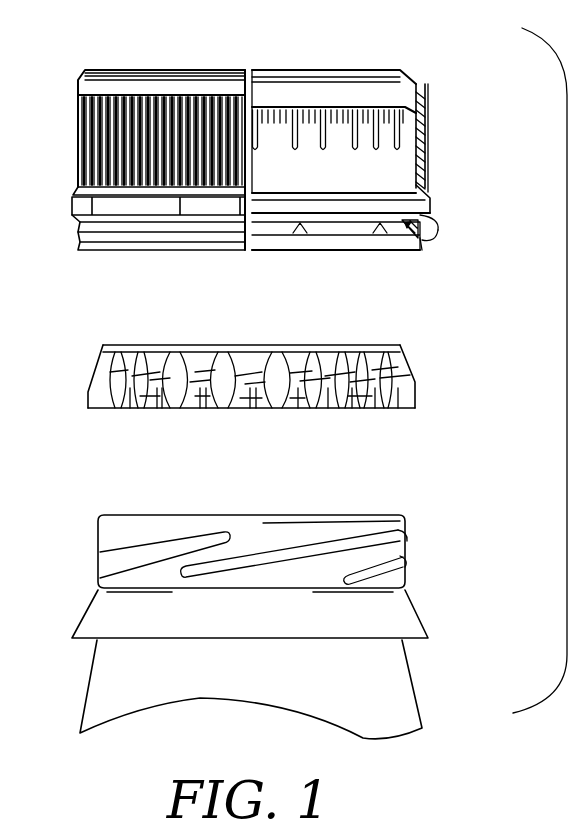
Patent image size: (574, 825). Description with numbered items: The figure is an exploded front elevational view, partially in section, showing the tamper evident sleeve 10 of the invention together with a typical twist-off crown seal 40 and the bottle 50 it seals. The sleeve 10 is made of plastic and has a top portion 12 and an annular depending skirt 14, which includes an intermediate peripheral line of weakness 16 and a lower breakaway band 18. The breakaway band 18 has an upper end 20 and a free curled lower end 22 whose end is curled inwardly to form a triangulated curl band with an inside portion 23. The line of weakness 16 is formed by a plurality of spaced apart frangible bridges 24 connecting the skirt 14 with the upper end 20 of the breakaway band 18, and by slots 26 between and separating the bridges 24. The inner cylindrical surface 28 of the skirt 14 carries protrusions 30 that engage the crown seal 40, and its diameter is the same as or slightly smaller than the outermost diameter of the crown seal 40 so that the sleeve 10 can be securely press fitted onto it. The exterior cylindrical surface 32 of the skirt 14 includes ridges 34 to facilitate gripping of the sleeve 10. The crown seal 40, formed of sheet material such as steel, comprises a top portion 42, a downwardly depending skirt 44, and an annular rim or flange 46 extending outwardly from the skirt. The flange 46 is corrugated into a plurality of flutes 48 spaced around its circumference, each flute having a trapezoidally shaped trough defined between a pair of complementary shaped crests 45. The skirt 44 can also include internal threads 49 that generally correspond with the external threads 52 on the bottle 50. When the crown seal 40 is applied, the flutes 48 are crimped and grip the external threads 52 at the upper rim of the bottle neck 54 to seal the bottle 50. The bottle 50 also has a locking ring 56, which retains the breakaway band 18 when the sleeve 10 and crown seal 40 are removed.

The tamper evident sleeve 10 is at (222, 58).
The top portion 12 is at (421, 72).
The annular depending skirt 14 is at (437, 90).
The intermediate peripheral line of weakness 16 is at (440, 212).
The lower breakaway band 18 is at (434, 236).
The upper end 20 is at (432, 222).
The free curled lower end 22 is at (424, 242).
The inside portion 23 is at (406, 242).
The frangible bridges 24 is at (330, 212).
The slots 26 is at (272, 212).
The inner cylindrical surface 28 is at (415, 168).
The protrusions 30 is at (350, 137).
The exterior cylindrical surface 32 is at (427, 146).
The ridges 34 is at (427, 116).
The crown seal 40 is at (225, 334).
The top portion 42 is at (288, 347).
The downwardly depending skirt 44 is at (104, 368).
The crests 45 is at (250, 400).
The annular rim or flange 46 is at (88, 392).
The flutes 48 is at (180, 395).
The internal threads 49 is at (270, 393).
The bottle 50 is at (425, 657).
The external threads 52 is at (403, 527).
The bottle neck 54 is at (97, 580).
The locking ring 56 is at (88, 617).